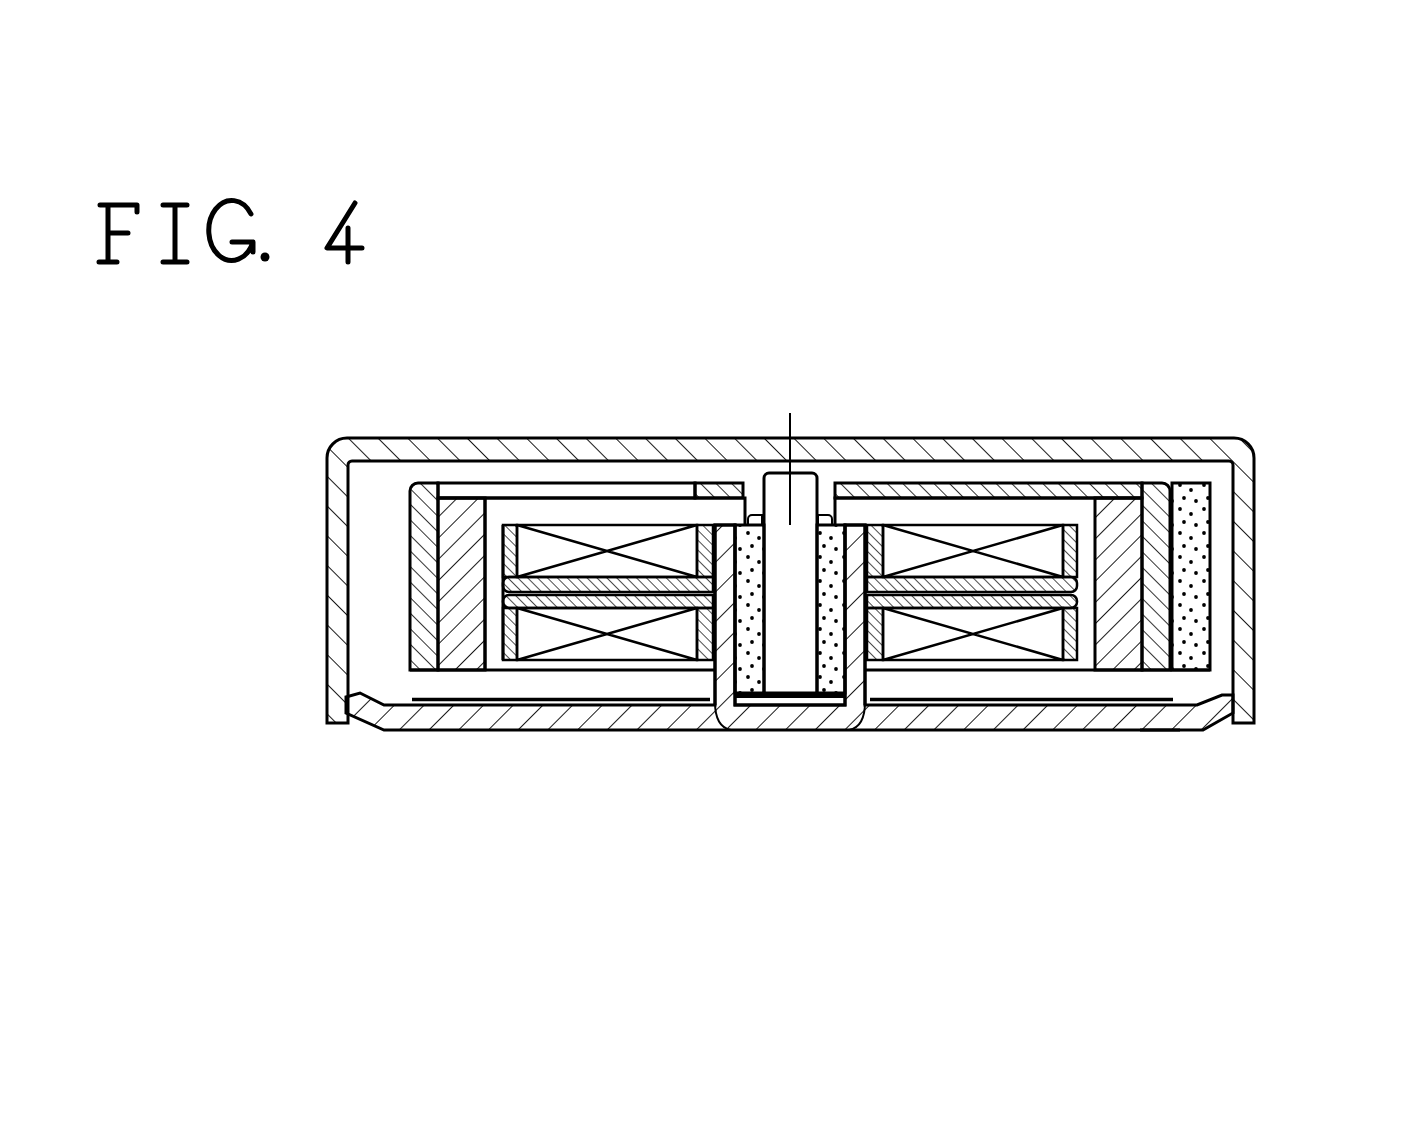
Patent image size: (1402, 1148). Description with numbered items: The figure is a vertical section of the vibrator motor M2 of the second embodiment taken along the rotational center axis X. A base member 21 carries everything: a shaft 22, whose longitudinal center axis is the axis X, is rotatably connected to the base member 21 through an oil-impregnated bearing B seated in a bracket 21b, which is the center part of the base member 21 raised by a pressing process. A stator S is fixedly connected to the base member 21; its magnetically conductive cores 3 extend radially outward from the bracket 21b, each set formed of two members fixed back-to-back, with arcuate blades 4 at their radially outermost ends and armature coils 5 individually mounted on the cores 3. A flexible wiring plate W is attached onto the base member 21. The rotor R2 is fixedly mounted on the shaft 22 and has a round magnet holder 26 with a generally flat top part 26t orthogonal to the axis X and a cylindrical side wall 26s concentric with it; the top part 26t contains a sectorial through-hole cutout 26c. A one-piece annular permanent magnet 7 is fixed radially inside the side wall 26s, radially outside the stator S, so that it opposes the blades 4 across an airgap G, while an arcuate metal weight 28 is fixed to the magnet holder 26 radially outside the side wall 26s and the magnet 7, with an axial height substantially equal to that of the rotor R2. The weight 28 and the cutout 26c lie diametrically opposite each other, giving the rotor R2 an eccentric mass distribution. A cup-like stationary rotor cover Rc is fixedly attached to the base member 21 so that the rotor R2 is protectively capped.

The vibrator motor M2 is at (1045, 291).
The rotor cover Rc is at (1175, 447).
The rotor R2 is at (1063, 471).
The magnet holder 26 is at (978, 490).
The cutout 26c is at (625, 490).
The top part 26t is at (713, 490).
The side wall 26s is at (430, 591).
The annular permanent magnet 7 is at (465, 545).
The arcuate metal weight 28 is at (1195, 523).
The shaft 22 is at (803, 677).
The center axis X is at (790, 413).
The oil-impregnated bearing B is at (760, 640).
The base member 21 is at (1212, 718).
The bracket 21b is at (738, 620).
The flexible wiring plate W is at (1158, 729).
The stator S is at (946, 667).
The core 3 is at (667, 602).
The blade 4 is at (533, 660).
The armature coil 5 is at (612, 652).
The airgap G is at (496, 622).